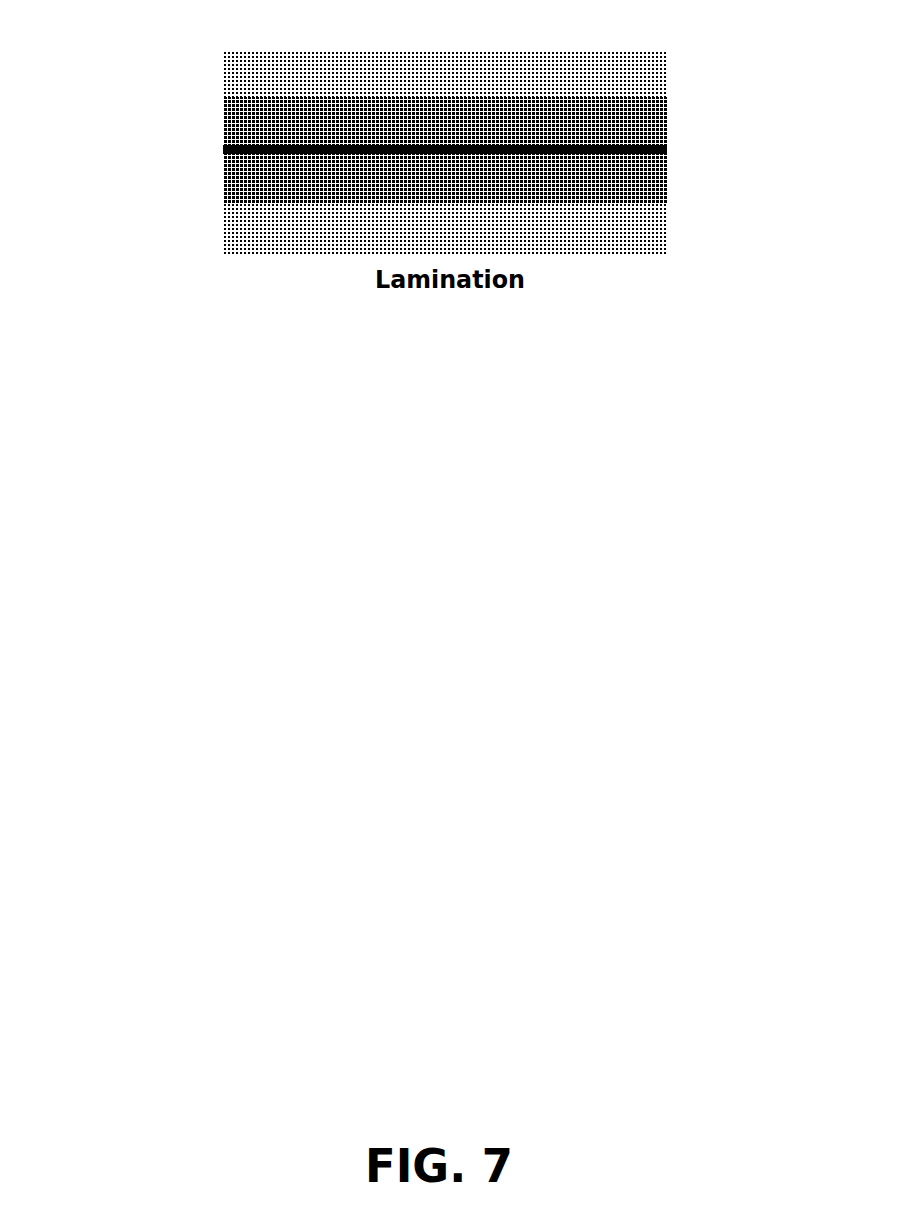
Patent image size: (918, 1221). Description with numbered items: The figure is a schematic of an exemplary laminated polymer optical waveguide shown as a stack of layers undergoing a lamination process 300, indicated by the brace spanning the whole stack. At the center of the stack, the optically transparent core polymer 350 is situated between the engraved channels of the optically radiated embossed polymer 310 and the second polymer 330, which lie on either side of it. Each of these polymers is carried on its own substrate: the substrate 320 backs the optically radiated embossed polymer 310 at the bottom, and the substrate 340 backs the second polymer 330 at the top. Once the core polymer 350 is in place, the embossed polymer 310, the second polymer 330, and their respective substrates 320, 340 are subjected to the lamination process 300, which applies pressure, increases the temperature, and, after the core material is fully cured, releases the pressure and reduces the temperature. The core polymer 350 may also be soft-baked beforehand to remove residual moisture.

The lamination process 300 is at (421, 152).
The optically radiated embossed polymer 310 is at (445, 176).
The substrate 320 is at (445, 229).
The second polymer 330 is at (445, 123).
The substrate 340 is at (445, 73).
The optically transparent core polymer 350 is at (652, 148).